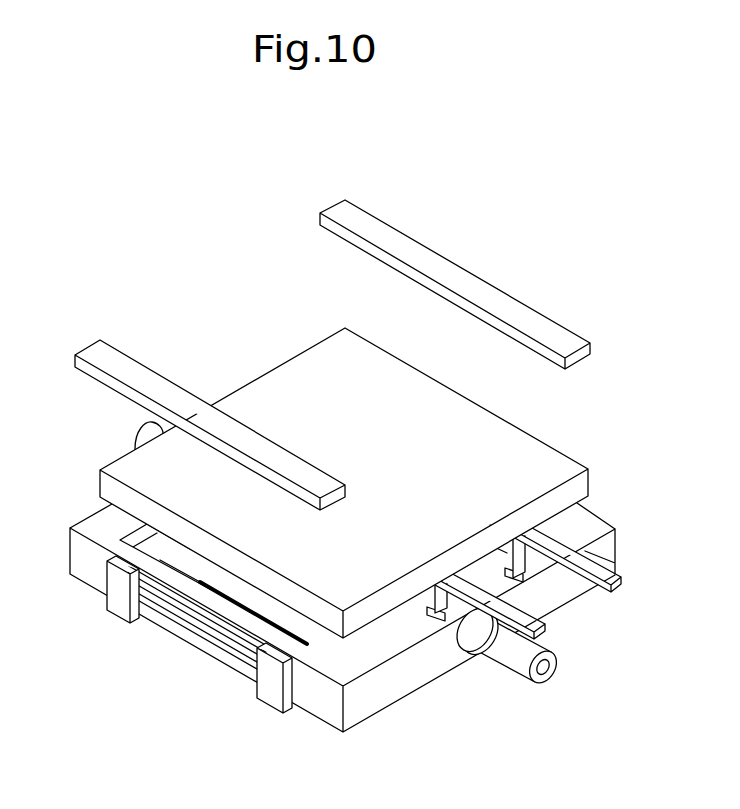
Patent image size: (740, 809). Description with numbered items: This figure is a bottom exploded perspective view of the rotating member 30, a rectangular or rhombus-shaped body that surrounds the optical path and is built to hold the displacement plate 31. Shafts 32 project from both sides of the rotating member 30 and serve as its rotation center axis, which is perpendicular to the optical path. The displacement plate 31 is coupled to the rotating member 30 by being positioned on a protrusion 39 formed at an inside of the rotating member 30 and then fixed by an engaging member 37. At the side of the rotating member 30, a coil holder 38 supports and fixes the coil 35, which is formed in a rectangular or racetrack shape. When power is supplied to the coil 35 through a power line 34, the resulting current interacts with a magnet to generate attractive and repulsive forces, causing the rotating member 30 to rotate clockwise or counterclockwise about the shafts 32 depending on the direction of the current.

The rotating member 30 is at (368, 700).
The displacement plate 31 is at (288, 377).
The shaft 32 is at (512, 655).
The power line 34 is at (623, 566).
The coil 35 is at (207, 653).
The engaging member 37 is at (458, 273).
The coil holder 38 is at (268, 693).
The protrusion 39 is at (207, 583).